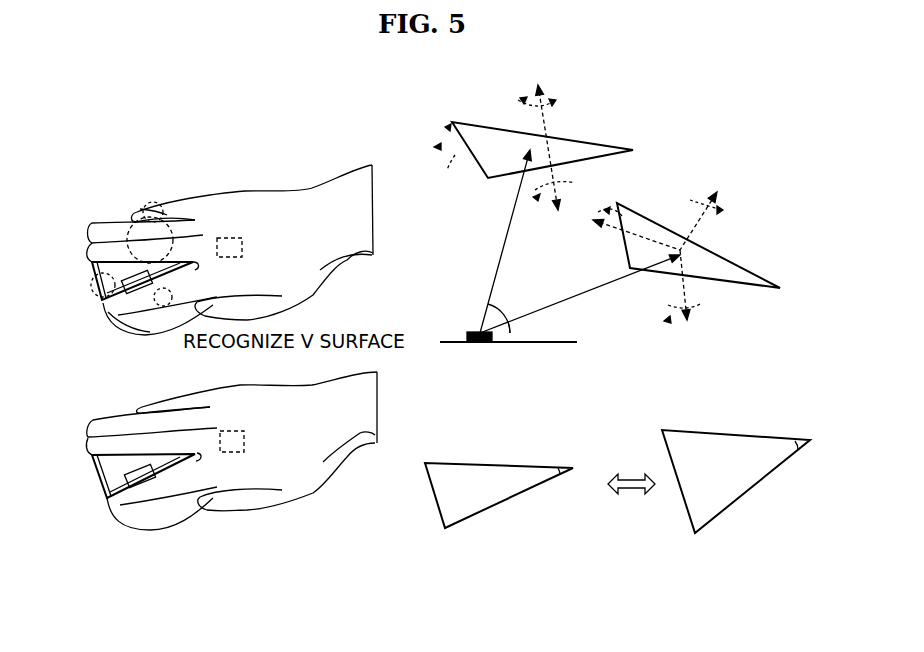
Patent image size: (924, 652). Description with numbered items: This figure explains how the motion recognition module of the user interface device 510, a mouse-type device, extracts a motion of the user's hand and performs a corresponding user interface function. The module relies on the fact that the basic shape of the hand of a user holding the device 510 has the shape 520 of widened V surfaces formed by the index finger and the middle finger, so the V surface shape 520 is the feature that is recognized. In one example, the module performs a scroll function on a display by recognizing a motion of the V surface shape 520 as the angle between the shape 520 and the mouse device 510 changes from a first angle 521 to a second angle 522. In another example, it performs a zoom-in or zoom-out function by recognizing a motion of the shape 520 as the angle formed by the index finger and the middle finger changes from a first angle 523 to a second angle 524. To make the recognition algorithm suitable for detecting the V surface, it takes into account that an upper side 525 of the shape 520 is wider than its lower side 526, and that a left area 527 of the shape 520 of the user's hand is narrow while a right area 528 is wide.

The user interface device 510 is at (88, 261).
The shape of the V surface 520 is at (92, 470).
The first angle 521 is at (512, 336).
The second angle 522 is at (500, 312).
The first angle 523 is at (542, 468).
The second angle 524 is at (790, 450).
The upper side 525 is at (88, 287).
The lower side 526 is at (120, 320).
The left area 527 is at (167, 308).
The right area 528 is at (170, 228).